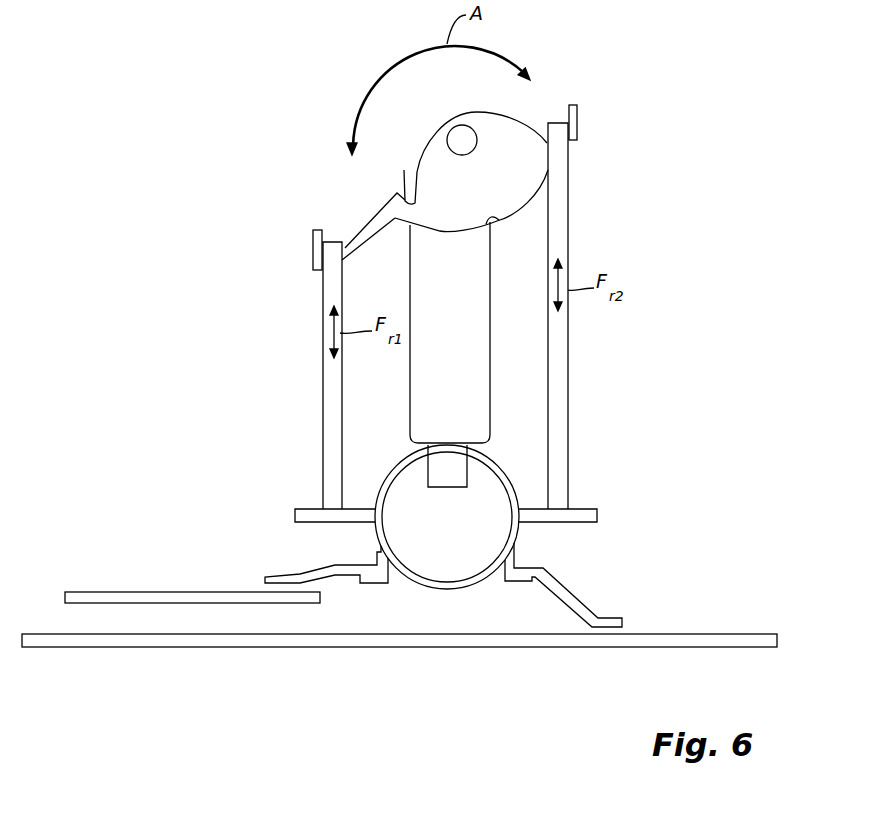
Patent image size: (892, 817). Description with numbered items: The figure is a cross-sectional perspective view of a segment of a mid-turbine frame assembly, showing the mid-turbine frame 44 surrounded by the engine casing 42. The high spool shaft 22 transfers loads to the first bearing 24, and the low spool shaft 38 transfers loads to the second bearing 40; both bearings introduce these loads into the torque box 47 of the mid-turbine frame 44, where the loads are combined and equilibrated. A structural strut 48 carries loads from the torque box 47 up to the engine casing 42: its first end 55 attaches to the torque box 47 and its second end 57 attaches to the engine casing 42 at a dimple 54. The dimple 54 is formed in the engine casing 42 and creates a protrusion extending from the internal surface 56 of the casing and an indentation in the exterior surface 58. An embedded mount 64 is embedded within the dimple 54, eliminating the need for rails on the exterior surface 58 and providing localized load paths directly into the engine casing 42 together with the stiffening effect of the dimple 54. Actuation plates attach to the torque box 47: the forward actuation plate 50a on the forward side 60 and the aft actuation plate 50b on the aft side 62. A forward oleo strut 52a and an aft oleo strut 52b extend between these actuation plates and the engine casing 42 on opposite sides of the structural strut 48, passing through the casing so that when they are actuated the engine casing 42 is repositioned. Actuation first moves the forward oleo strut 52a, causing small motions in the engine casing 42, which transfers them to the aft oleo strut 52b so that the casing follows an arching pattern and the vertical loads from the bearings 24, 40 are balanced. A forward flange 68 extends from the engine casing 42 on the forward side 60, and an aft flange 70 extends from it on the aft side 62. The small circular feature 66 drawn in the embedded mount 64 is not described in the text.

The high spool shaft 22 is at (135, 592).
The first bearing 24 is at (287, 577).
The low spool shaft 38 is at (660, 633).
The second bearing 40 is at (607, 615).
The engine casing 42 is at (357, 227).
The mid-turbine frame 44 is at (423, 595).
The torque box 47 is at (465, 589).
The structural strut 48 is at (490, 325).
The forward actuation plate 50a is at (303, 508).
The aft actuation plate 50b is at (598, 510).
The forward oleo strut 52a is at (325, 438).
The aft oleo strut 52b is at (568, 410).
The dimple 54 is at (404, 170).
The first end 55 is at (467, 445).
The internal surface 56 is at (358, 249).
The second end 57 is at (499, 225).
The exterior surface 58 is at (384, 208).
The forward side 60 is at (223, 443).
The aft side 62 is at (679, 531).
The embedded mount 64 is at (492, 127).
The pivot hole 66 is at (458, 137).
The forward flange 68 is at (313, 248).
The aft flange 70 is at (578, 107).